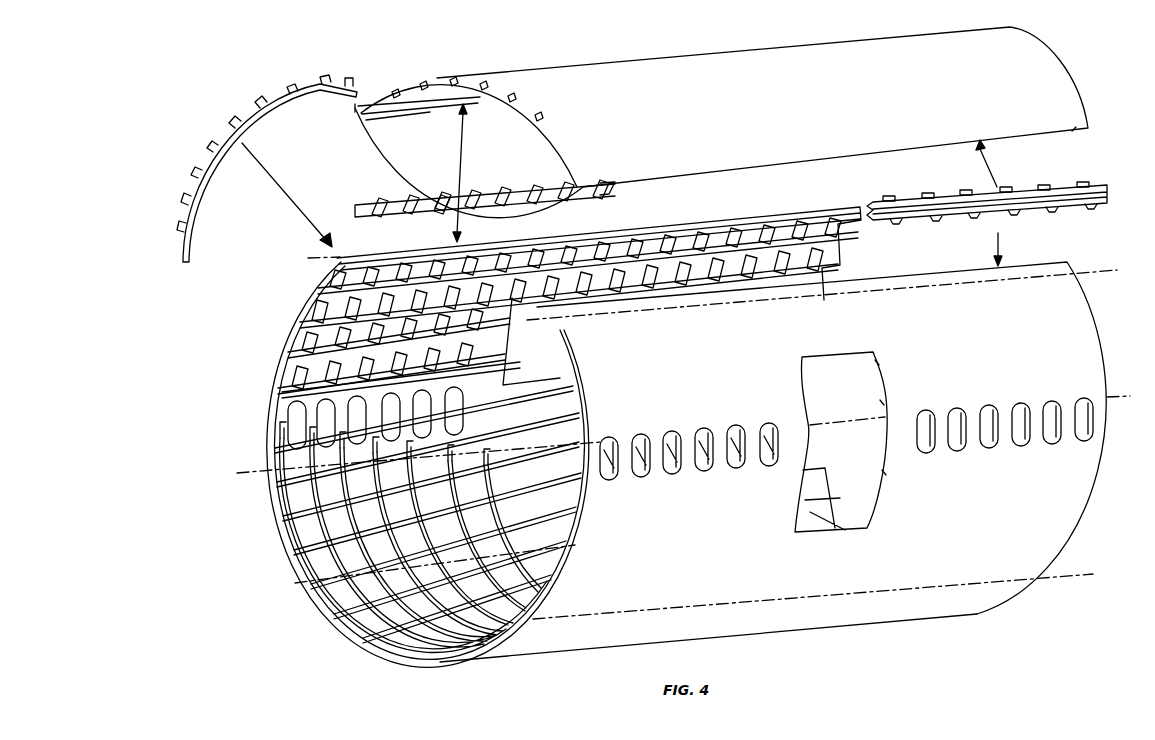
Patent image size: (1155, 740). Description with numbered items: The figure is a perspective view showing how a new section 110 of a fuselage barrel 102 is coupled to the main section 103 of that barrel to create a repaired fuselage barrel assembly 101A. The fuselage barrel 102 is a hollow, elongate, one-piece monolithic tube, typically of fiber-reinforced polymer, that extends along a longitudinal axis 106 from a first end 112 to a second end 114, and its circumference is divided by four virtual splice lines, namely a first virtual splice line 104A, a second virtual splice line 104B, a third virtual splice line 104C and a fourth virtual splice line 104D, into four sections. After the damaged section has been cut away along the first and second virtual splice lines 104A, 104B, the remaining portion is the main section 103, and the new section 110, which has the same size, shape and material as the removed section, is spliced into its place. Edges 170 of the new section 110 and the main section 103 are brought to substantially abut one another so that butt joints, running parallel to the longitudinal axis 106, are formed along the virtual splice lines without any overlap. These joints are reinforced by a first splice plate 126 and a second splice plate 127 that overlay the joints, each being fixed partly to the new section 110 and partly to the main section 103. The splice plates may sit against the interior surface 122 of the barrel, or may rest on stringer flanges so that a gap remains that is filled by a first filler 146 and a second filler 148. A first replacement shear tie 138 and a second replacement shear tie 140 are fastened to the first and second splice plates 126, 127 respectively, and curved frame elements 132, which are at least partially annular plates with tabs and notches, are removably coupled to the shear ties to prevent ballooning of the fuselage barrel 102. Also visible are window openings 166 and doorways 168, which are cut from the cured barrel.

The repaired fuselage barrel assembly 101A is at (390, 663).
The fuselage barrel 102 is at (510, 670).
The main section 103 is at (274, 362).
The first virtual splice line 104A is at (308, 258).
The second virtual splice line 104B is at (1095, 270).
The third virtual splice line 104C is at (1070, 575).
The fourth virtual splice line 104D is at (295, 583).
The longitudinal axis 106 is at (252, 471).
The new section 110 is at (528, 62).
The first end 112 is at (285, 513).
The second end 114 is at (1103, 450).
The interior surface 122 is at (333, 590).
The first splice plate 126 is at (423, 207).
The second splice plate 127 is at (1072, 208).
The frame element 132 is at (313, 82).
The first replacement shear tie 138 is at (603, 199).
The second replacement shear tie 140 is at (1080, 183).
The first filler 146 is at (355, 204).
The second filler 148 is at (960, 205).
The window openings 166 is at (467, 405).
The doorways 168 is at (572, 418).
The edges 170 is at (343, 252).